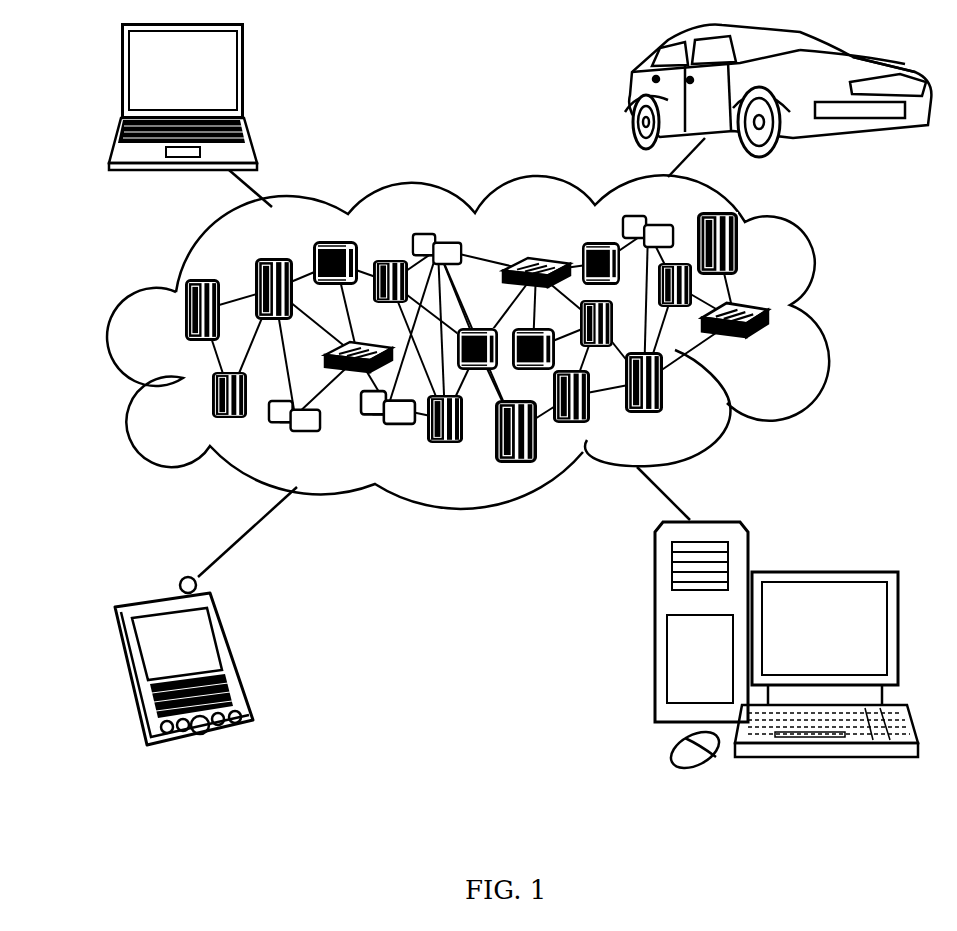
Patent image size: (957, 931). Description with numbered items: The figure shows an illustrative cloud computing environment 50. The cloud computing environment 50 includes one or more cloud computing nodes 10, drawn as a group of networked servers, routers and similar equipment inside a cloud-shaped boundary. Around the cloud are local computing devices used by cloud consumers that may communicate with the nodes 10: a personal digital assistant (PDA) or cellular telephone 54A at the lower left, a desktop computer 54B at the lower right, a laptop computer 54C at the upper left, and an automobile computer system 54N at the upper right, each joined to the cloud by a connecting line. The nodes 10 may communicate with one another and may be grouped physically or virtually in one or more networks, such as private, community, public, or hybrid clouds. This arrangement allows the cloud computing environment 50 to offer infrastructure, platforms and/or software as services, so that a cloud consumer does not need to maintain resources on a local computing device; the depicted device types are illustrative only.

The cloud computing nodes 10 is at (779, 348).
The cloud computing environment 50 is at (825, 315).
The personal digital assistant (PDA) or cellular telephone 54A is at (233, 653).
The desktop computer 54B is at (822, 572).
The laptop computer 54C is at (245, 78).
The automobile computer system 54N is at (630, 92).